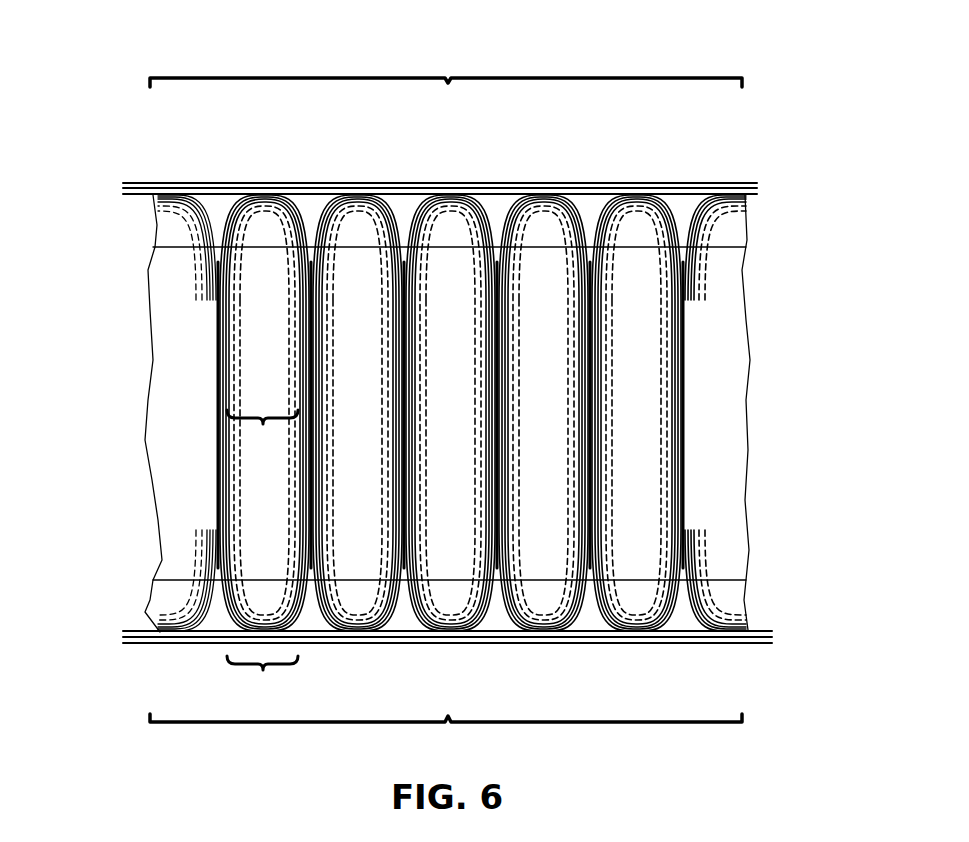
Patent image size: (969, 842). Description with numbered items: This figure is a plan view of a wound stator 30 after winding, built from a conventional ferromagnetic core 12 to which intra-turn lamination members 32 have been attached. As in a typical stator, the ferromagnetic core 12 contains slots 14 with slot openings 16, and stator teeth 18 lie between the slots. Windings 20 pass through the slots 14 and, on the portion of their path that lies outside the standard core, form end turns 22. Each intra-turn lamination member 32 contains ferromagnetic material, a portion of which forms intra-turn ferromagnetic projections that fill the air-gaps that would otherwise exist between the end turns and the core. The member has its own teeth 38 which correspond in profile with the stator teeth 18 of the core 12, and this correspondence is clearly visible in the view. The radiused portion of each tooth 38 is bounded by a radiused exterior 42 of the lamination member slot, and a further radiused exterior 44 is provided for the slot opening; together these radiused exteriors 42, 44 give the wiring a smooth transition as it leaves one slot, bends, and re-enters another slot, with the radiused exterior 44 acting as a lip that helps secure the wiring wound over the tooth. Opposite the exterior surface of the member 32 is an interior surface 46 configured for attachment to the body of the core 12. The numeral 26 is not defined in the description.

The ferromagnetic core 12 is at (772, 364).
The slots 14 is at (193, 340).
The slot openings 16 is at (210, 368).
The stator teeth 18 is at (262, 431).
The windings 20 is at (316, 182).
The end turns 22 is at (446, 400).
The side edge of media 26 is at (164, 580).
The wound stator 30 is at (138, 136).
The intra-turn lamination member 32 is at (762, 220).
The teeth 38 is at (262, 680).
The radiused exterior of slot 42 is at (680, 650).
The radiused exterior of slot opening 44 is at (672, 636).
The interior surface 46 is at (190, 584).